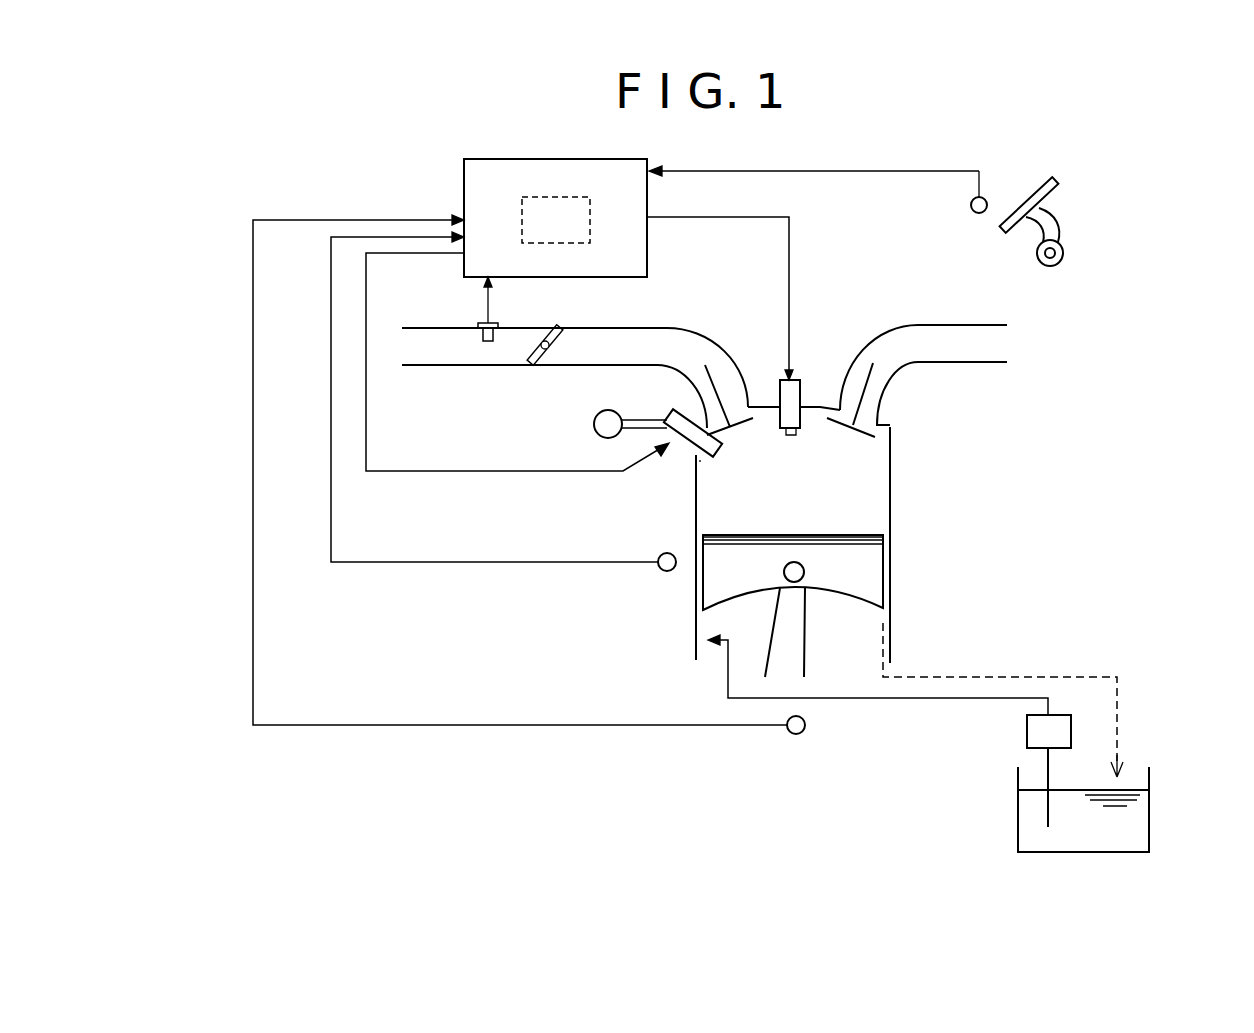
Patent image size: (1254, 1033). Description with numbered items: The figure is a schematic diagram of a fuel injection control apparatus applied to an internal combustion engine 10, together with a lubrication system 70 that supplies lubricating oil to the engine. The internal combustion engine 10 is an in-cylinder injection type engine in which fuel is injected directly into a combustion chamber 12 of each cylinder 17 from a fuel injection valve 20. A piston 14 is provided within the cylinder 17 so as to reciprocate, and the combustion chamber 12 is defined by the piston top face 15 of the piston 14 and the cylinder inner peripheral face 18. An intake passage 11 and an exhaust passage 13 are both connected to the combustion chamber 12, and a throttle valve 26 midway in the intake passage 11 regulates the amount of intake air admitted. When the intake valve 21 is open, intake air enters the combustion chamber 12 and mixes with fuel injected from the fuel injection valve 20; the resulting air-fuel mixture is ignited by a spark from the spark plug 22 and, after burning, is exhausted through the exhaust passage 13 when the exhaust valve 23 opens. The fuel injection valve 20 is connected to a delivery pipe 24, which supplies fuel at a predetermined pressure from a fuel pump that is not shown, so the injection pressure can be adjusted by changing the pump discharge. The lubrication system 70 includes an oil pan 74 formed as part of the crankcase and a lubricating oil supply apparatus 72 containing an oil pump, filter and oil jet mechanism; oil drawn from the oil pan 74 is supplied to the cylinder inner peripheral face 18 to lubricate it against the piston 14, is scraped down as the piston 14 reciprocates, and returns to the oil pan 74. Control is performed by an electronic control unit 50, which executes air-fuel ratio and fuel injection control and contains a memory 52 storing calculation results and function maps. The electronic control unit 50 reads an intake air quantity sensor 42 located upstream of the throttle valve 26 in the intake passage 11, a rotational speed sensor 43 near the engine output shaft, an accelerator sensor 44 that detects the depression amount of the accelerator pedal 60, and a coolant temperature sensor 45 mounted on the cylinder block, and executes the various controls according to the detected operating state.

The internal combustion engine 10 is at (862, 307).
The intake passage 11 is at (640, 328).
The combustion chamber 12 is at (775, 478).
The exhaust passage 13 is at (960, 325).
The piston 14 is at (870, 565).
The piston top face 15 is at (784, 518).
The cylinder 17 is at (890, 620).
The cylinder inner peripheral face 18 is at (880, 490).
The fuel injection valve 20 is at (683, 440).
The intake valve 21 is at (728, 373).
The spark plug 22 is at (805, 385).
The exhaust valve 23 is at (880, 400).
The delivery pipe 24 is at (598, 418).
The throttle valve 26 is at (538, 327).
The intake air quantity sensor 42 is at (478, 324).
The rotational speed sensor 43 is at (792, 734).
The accelerator sensor 44 is at (987, 197).
The coolant temperature sensor 45 is at (665, 571).
The electronic control unit 50 is at (464, 172).
The memory 52 is at (553, 197).
The accelerator pedal 60 is at (1056, 182).
The lubrication system 70 is at (1123, 582).
The lubricating oil supply apparatus 72 is at (1027, 728).
The oil pan 74 is at (1149, 800).